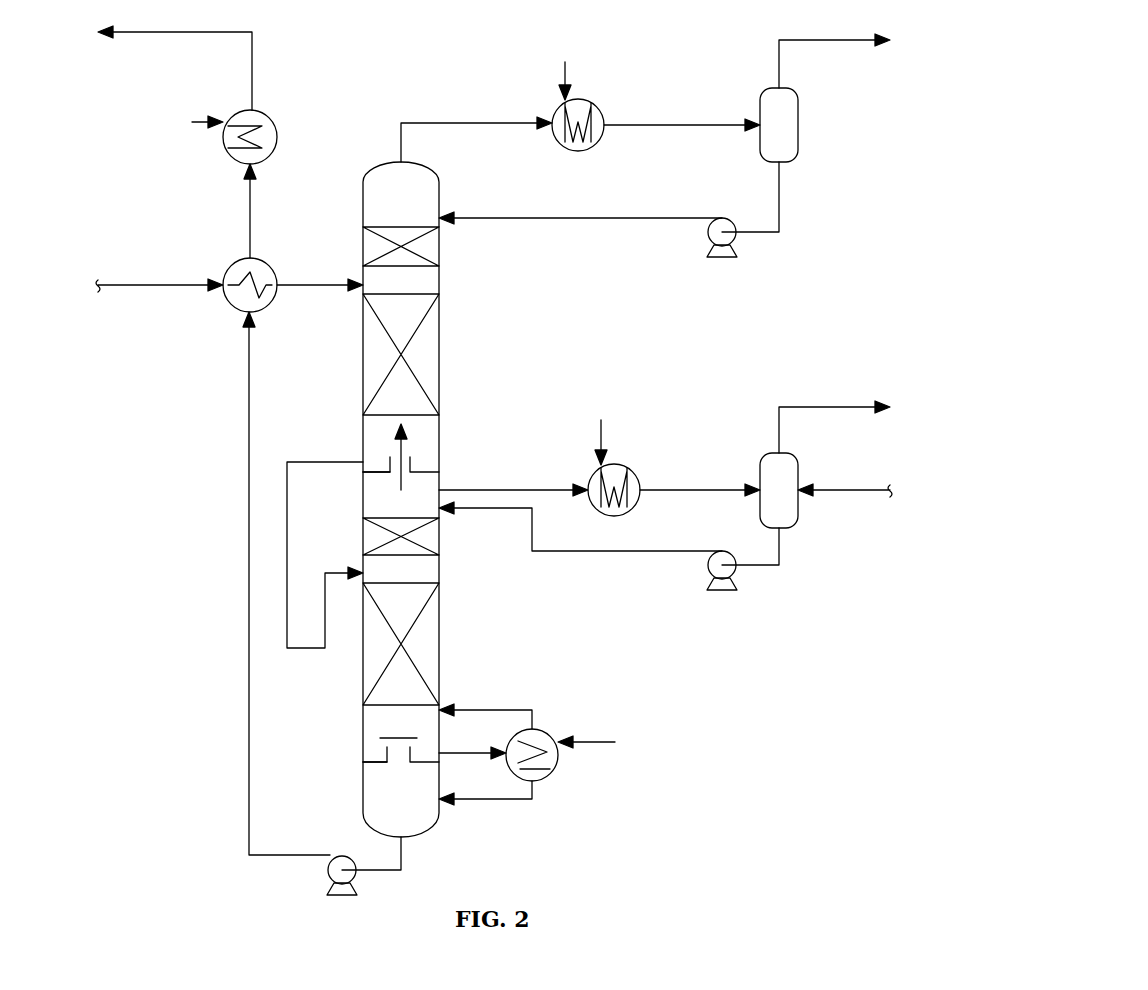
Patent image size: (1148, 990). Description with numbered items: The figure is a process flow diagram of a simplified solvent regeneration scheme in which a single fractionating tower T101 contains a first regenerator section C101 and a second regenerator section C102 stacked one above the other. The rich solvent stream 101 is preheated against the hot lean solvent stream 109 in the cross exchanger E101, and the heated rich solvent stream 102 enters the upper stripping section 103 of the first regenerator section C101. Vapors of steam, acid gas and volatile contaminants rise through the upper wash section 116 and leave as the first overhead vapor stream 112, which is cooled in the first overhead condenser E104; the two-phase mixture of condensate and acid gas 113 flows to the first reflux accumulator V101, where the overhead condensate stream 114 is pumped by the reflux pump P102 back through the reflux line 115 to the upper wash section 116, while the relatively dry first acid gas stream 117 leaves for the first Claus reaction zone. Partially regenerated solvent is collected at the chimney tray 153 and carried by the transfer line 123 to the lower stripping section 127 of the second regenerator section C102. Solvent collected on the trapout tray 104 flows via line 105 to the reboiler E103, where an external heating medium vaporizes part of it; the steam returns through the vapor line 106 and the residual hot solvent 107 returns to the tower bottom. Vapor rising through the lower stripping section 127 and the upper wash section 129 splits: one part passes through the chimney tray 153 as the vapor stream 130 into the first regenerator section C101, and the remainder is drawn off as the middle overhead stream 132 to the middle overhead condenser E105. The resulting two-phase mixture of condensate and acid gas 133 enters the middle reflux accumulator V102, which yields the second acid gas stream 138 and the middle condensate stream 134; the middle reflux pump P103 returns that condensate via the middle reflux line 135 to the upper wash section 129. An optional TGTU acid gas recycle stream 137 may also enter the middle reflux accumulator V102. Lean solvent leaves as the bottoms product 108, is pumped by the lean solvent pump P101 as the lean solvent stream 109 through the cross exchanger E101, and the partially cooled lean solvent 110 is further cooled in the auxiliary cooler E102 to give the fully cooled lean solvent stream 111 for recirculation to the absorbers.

The rich solvent stream 101 is at (155, 283).
The heated rich solvent stream 102 is at (322, 296).
The upper stripping section 103 is at (373, 364).
The trapout tray 104 is at (371, 766).
The line 105 is at (450, 753).
The vapor line 106 is at (493, 710).
The residual hot solvent 107 is at (505, 805).
The bottoms product 108 is at (401, 860).
The lean solvent stream 109 is at (247, 748).
The partially cooled lean solvent 110 is at (252, 218).
The fully cooled lean solvent stream 111 is at (253, 52).
The first overhead vapor stream 112 is at (480, 120).
The two-phase mixture of condensate and acid gas 113 is at (710, 124).
The overhead condensate stream 114 is at (779, 205).
The reflux line 115 is at (628, 218).
The upper wash section 116 is at (366, 248).
The first acid gas stream 117 is at (778, 58).
The transfer line 123 is at (289, 541).
The lower stripping section 127 is at (420, 646).
The upper wash section 129 is at (430, 541).
The vapor stream 130 is at (402, 453).
The middle overhead stream 132 is at (505, 490).
The two-phase mixture of condensate and acid gas 133 is at (678, 490).
The middle condensate stream 134 is at (780, 548).
The middle reflux line 135 is at (645, 551).
The TGTU acid gas recycle stream 137 is at (830, 490).
The second acid gas stream 138 is at (800, 405).
The chimney tray 153 is at (372, 475).
The cross exchanger E101 is at (238, 260).
The auxiliary cooler E102 is at (266, 115).
The reboiler E103 is at (550, 735).
The first overhead condenser E104 is at (600, 114).
The middle overhead condenser E105 is at (628, 470).
The first reflux accumulator V101 is at (799, 130).
The middle reflux accumulator V102 is at (797, 462).
The lean solvent pump P101 is at (342, 856).
The reflux pump P102 is at (735, 244).
The middle reflux pump P103 is at (708, 571).
The fractionating tower T101 is at (445, 356).
The first regenerator section C101 is at (362, 437).
The second regenerator section C102 is at (362, 731).